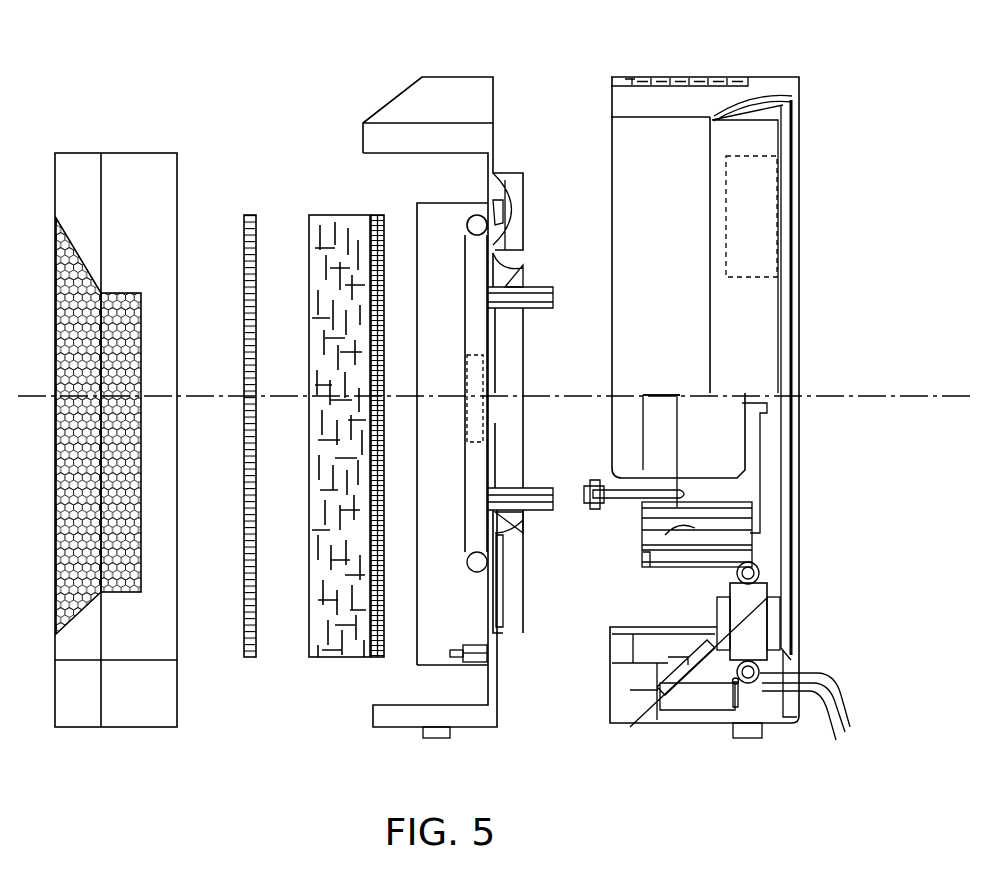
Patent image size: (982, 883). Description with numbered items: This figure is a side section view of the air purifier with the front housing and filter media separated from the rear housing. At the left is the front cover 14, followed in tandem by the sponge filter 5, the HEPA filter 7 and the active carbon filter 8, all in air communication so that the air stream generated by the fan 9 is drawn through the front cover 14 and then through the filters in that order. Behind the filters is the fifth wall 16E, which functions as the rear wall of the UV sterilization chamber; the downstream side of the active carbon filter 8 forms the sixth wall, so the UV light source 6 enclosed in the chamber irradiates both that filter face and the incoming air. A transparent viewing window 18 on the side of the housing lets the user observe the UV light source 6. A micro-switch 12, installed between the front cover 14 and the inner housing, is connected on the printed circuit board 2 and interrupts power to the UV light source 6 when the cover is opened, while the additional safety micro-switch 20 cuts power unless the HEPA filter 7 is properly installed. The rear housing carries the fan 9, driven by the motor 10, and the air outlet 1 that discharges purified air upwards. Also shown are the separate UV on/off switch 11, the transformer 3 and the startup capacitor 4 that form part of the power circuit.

The air outlet 1 is at (650, 78).
The printed circuit board 2 is at (767, 203).
The transformer 3 is at (767, 598).
The startup capacitor 4 is at (732, 697).
The sponge filter 5 is at (247, 215).
The UV light source 6 is at (470, 221).
The HEPA filter 7 is at (322, 226).
The active carbon filter 8 is at (374, 215).
The fan 9 is at (687, 528).
The motor 10 is at (677, 413).
The UV on/off switch 11 is at (630, 187).
The micro-switch 12 is at (505, 217).
The front cover 14 is at (84, 160).
The fifth wall 16E is at (478, 578).
The viewing window 18 is at (475, 358).
The additional safety micro-switch 20 is at (486, 653).